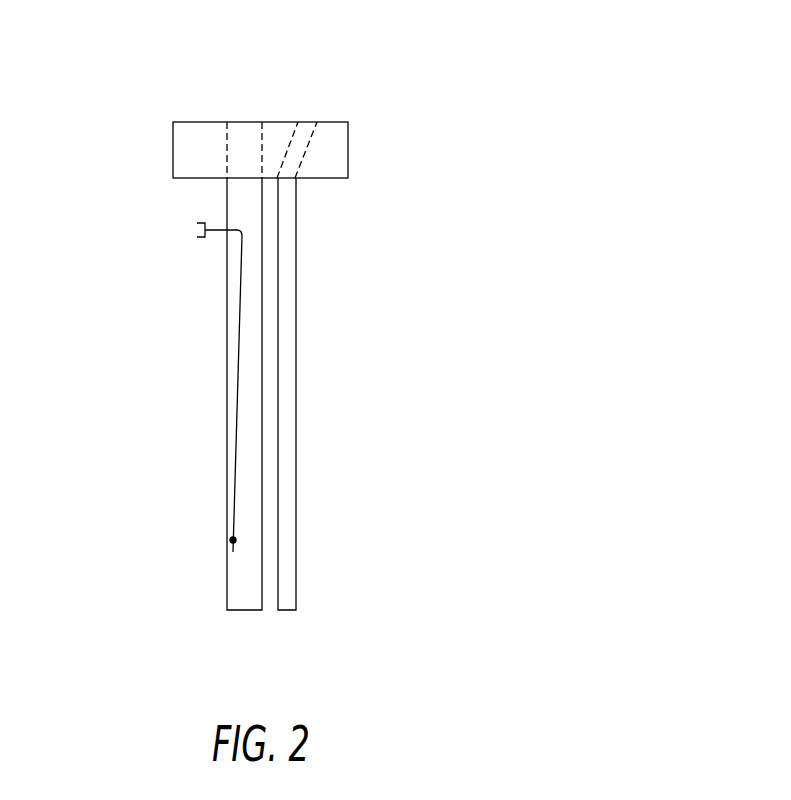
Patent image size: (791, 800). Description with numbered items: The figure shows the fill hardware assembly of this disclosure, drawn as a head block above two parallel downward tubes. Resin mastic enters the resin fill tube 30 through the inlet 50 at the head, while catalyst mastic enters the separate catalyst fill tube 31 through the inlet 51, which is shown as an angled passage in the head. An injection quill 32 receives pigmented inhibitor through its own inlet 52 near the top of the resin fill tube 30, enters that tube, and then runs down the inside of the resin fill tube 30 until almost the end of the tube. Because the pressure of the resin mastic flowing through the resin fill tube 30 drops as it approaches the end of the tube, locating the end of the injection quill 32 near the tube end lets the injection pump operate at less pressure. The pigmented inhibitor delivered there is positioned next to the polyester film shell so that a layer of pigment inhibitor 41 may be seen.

The resin fill tube 30 is at (227, 200).
The catalyst fill tube 31 is at (297, 228).
The injection quill 32 is at (216, 230).
The layer of pigment inhibitor 41 is at (232, 540).
The inlet 50 is at (243, 122).
The inlet 51 is at (305, 122).
The inlet 52 is at (197, 232).